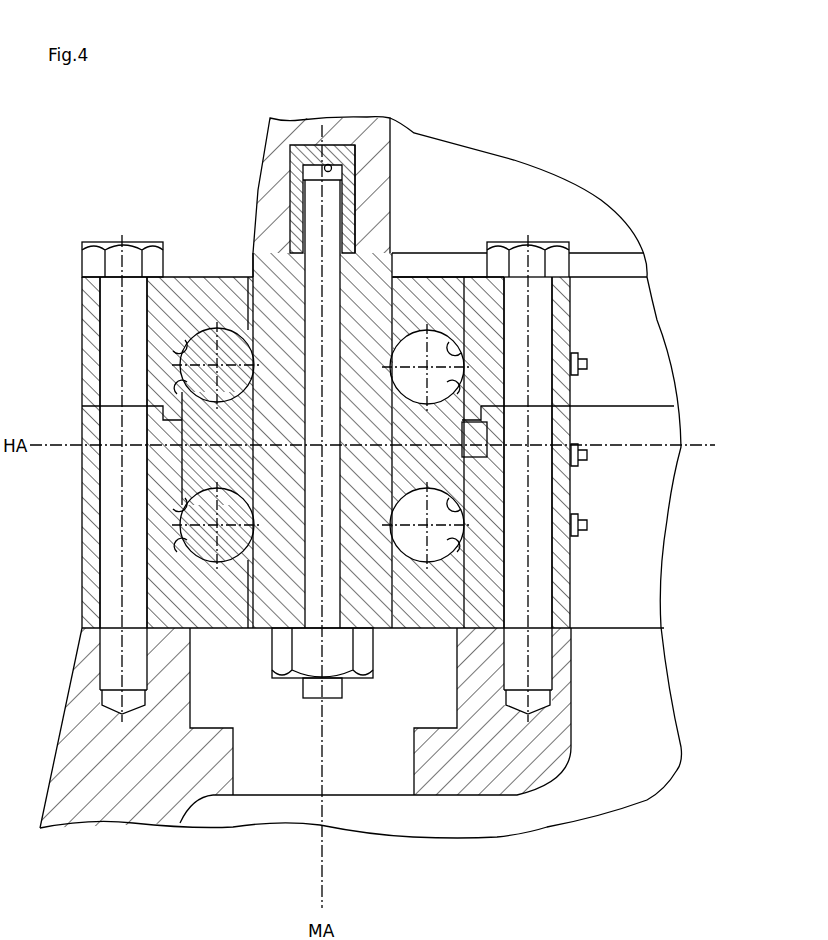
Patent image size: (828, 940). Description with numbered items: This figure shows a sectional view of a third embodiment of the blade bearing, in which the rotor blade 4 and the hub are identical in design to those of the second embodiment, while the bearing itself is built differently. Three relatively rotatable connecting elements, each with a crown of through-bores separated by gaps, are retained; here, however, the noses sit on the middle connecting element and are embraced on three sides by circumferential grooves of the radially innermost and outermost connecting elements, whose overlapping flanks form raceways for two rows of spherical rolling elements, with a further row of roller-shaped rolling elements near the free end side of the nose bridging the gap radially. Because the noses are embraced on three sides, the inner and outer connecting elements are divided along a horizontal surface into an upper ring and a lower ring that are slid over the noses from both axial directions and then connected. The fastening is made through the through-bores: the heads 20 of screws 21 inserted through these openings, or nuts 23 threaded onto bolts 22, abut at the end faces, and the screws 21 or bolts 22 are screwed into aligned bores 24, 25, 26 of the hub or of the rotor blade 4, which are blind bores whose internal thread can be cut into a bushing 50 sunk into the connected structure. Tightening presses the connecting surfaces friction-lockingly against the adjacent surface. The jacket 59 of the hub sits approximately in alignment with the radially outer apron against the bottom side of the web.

The rotor blade 4 is at (374, 134).
The head 20 is at (561, 258).
The screw 21 is at (547, 299).
The bolt 22 is at (311, 187).
The nut 23 is at (281, 668).
The bore 24 is at (554, 672).
The bore 25 is at (103, 680).
The bore 26 is at (330, 166).
The bushing 50 is at (297, 152).
The jacket of the hub 59 is at (115, 745).